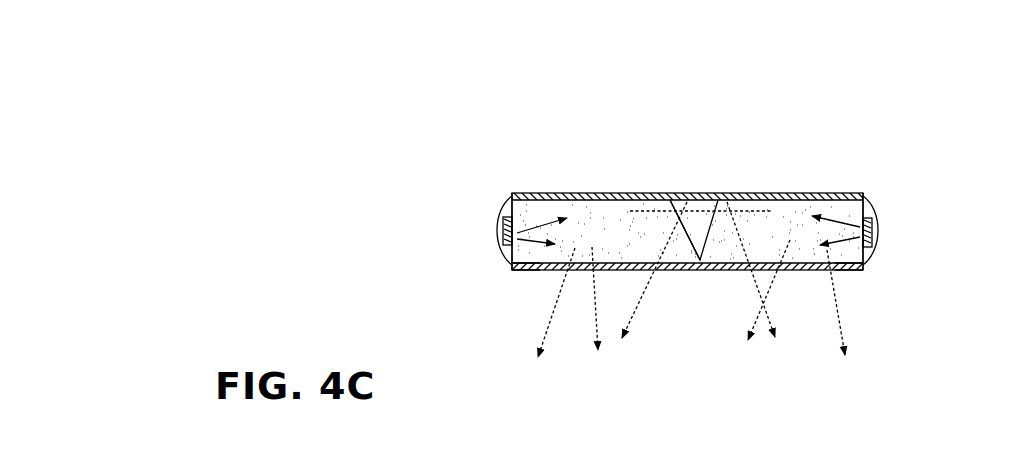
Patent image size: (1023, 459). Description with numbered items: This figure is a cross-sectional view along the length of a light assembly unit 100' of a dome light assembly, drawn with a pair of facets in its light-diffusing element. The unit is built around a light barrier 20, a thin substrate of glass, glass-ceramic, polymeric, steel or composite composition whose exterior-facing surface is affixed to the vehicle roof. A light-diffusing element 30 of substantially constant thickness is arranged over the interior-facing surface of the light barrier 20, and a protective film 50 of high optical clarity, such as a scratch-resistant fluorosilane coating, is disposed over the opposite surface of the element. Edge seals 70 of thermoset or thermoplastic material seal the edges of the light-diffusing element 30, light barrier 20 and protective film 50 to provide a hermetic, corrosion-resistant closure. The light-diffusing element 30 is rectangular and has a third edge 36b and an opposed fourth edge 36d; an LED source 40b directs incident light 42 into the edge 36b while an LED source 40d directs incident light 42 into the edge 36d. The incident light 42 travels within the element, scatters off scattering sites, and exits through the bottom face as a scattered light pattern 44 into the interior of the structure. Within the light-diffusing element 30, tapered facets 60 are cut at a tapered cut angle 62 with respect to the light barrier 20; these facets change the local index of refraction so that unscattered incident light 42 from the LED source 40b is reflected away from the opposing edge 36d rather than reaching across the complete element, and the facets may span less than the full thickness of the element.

The light assembly unit 100' is at (687, 145).
The light barrier 20 is at (832, 197).
The light-diffusing element 30 is at (775, 214).
The third edge 36b is at (509, 193).
The fourth edge 36d is at (868, 198).
The LED source 40b is at (498, 216).
The LED source 40d is at (885, 220).
The incident light 42 is at (537, 222).
The scattered light pattern 44 is at (565, 292).
The protective film 50 is at (863, 270).
The tapered facet 60 is at (703, 212).
The tapered cut angle 62 is at (684, 214).
The edge seal 70 is at (512, 270).